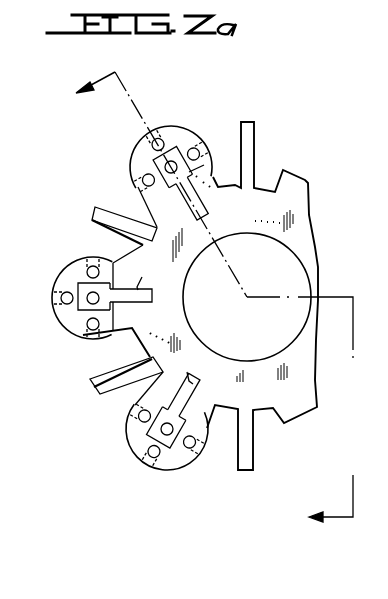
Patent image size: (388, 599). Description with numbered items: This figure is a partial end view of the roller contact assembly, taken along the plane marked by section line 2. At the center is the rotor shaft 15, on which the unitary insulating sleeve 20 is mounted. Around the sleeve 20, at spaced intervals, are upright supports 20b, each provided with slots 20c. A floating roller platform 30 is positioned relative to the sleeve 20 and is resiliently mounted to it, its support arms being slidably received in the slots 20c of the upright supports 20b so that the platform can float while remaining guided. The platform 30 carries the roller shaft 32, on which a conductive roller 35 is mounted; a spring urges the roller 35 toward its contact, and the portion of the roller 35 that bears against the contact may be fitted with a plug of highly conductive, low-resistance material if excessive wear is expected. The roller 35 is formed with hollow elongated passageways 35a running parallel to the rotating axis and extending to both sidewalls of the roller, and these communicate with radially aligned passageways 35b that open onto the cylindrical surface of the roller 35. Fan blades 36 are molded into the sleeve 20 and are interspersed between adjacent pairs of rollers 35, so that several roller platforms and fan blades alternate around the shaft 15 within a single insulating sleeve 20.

The section line 2 is at (205, 301).
The rotor shaft 15 is at (258, 321).
The unitary insulating sleeve 20 is at (303, 195).
The upright supports 20b is at (128, 263).
The slots 20c is at (140, 289).
The floating roller platform 30 is at (203, 210).
The roller shaft 32 is at (178, 162).
The roller 35 is at (160, 131).
The hollow elongated passageways 35a is at (146, 181).
The radially aligned passageways 35b is at (162, 136).
The fan blades 36 is at (256, 143).